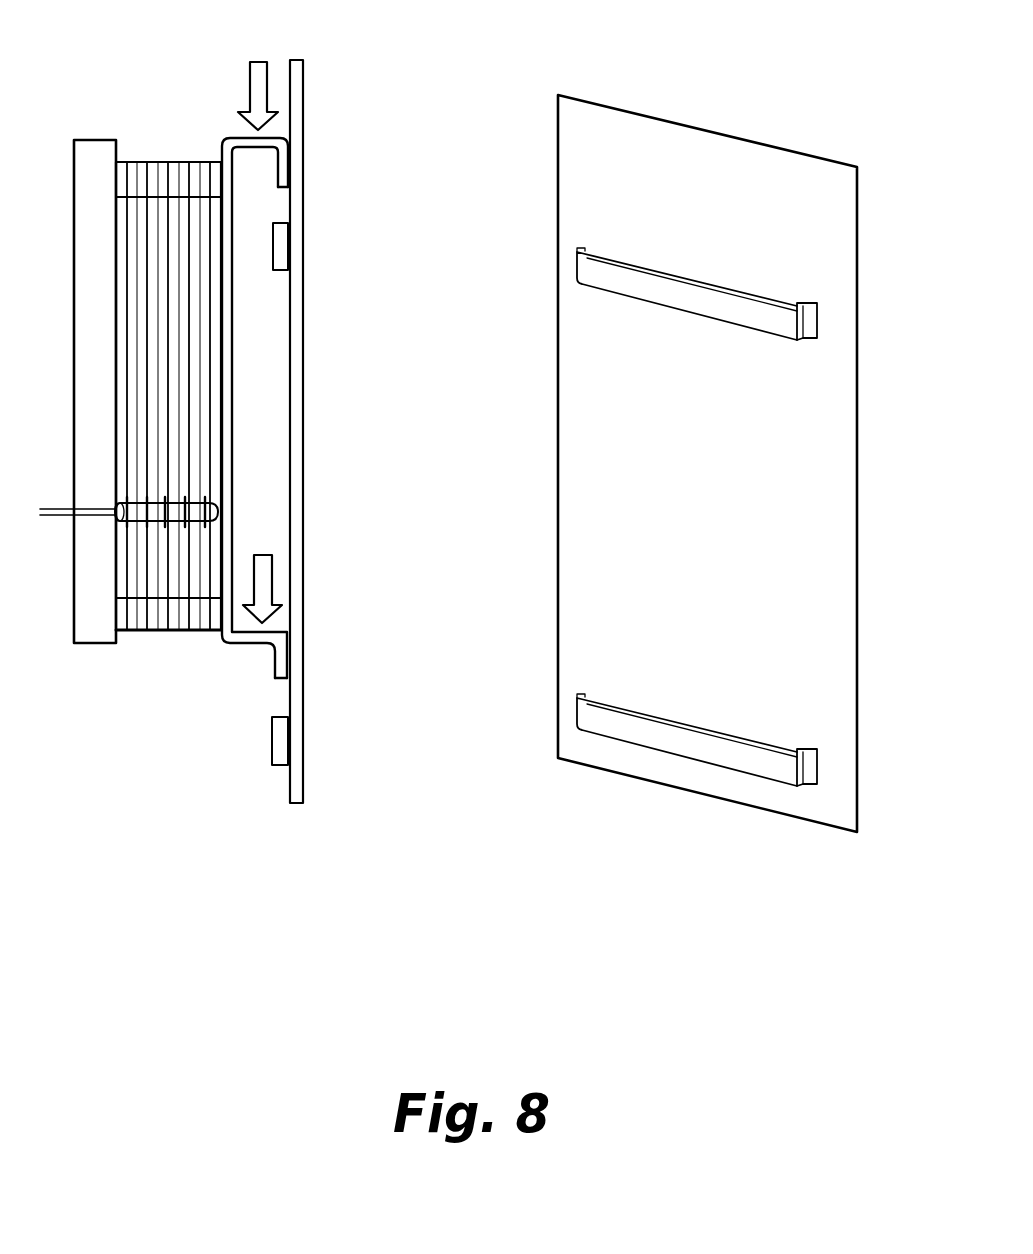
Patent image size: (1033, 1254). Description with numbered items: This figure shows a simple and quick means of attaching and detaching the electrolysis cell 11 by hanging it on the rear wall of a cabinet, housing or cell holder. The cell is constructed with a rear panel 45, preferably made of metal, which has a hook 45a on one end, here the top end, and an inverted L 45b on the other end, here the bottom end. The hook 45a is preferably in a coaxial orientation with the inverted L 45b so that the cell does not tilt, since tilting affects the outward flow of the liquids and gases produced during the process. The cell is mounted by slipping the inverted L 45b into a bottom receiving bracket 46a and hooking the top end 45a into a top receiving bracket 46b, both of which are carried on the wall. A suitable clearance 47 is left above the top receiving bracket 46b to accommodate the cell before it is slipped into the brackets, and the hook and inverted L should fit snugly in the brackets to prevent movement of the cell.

The electrolysis cell 11 is at (178, 333).
The rear panel 45 is at (235, 220).
The hook 45a is at (283, 167).
The inverted L 45b is at (282, 664).
The bottom receiving bracket 46a is at (740, 762).
The top receiving bracket 46b is at (740, 302).
The clearance 47 is at (293, 80).